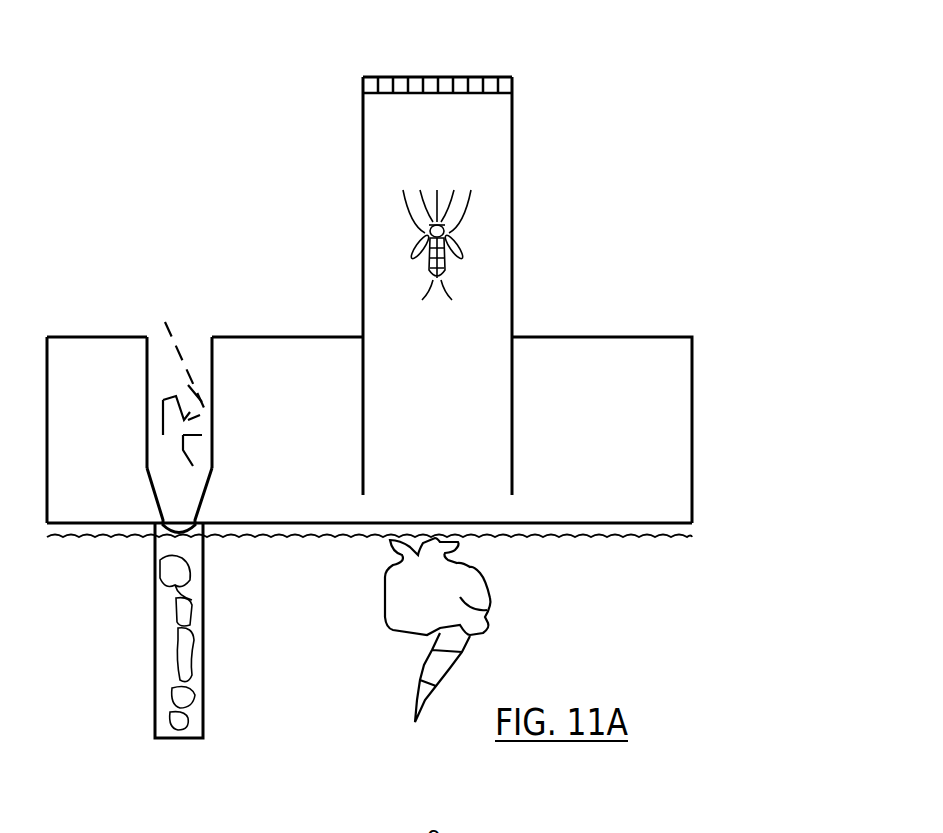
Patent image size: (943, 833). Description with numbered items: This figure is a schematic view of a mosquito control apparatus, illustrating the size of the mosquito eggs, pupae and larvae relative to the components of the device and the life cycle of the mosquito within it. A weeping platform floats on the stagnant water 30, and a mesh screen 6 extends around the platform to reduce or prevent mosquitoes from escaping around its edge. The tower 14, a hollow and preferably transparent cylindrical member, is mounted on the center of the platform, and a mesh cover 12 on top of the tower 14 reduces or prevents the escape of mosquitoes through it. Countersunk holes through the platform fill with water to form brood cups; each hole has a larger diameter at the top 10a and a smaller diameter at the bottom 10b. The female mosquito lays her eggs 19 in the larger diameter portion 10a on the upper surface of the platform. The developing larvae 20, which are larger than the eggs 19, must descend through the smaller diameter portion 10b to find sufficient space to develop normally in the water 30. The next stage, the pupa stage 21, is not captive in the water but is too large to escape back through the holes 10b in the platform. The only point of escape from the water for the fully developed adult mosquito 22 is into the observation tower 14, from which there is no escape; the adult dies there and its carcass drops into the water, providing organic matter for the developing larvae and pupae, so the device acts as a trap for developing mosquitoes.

The mesh screen 6 is at (72, 353).
The diameter at the top 10a is at (212, 352).
The diameter at the bottom 10b is at (182, 520).
The mesh cover 12 is at (425, 77).
The tower 14 is at (513, 143).
The eggs 19 is at (165, 322).
The larvae 20 is at (155, 699).
The pupa stage 21 is at (405, 718).
The adult mosquito 22 is at (465, 243).
The stagnant water 30 is at (85, 540).